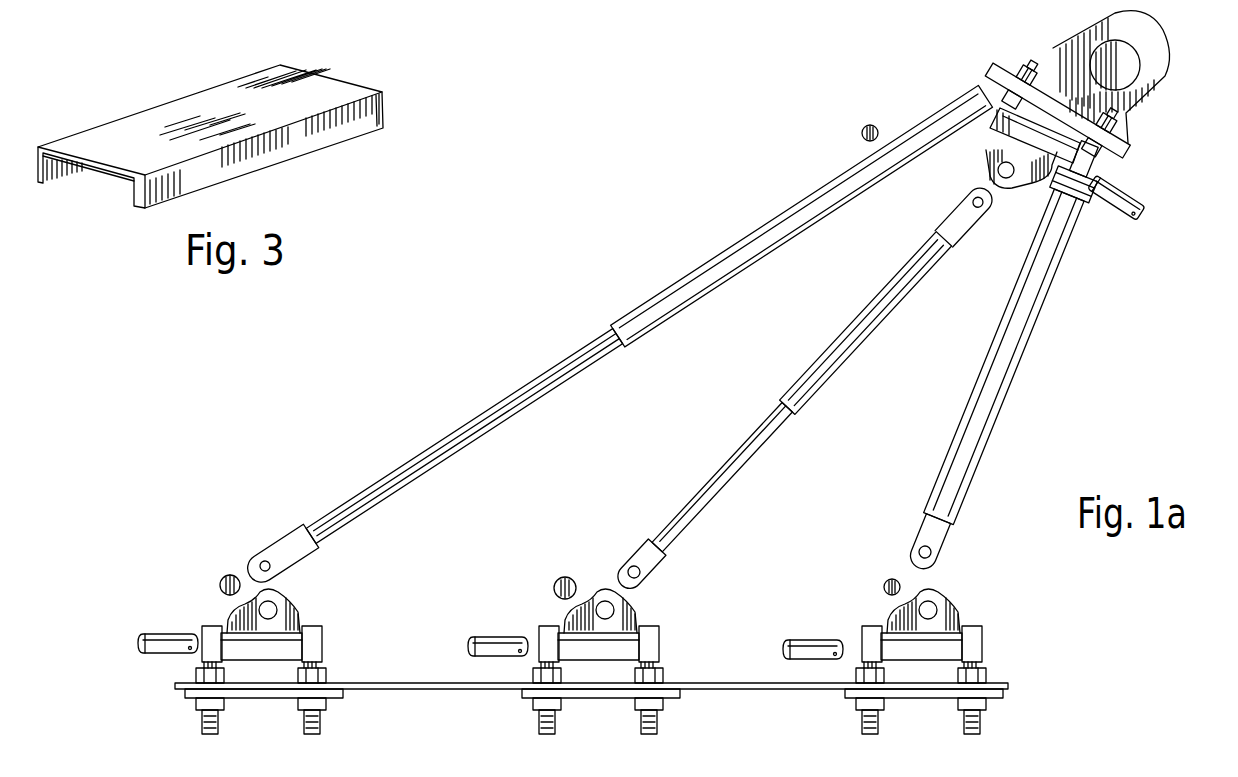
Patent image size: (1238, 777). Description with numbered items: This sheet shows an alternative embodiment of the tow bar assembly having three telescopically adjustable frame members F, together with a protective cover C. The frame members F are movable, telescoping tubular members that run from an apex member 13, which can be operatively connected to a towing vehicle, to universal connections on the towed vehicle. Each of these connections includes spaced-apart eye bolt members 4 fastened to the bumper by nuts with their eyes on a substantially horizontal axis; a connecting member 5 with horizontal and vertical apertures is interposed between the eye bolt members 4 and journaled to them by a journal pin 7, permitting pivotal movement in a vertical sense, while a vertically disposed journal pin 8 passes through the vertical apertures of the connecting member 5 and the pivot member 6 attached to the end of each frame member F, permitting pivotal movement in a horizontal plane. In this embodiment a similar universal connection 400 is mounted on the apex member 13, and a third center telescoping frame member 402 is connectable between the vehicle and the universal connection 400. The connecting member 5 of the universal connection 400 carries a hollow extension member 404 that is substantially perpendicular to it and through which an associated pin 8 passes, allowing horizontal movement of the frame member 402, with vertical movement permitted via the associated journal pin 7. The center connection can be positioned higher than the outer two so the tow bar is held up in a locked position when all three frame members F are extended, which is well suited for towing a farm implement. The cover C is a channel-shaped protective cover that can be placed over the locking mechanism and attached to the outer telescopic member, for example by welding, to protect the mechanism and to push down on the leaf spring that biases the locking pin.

In FIG. 3, the cover C is at (130, 113).
In FIG. 1A, the eye bolt members 4 is at (322, 632).
In FIG. 1A, the connecting member 5 is at (298, 608).
In FIG. 1A, the pivot member 6 is at (288, 533).
In FIG. 1A, the journal pin 7 is at (190, 632).
In FIG. 1A, the journal pin 8 is at (224, 578).
In FIG. 1A, the apex member 13 is at (1060, 45).
In FIG. 1A, the frame members F is at (694, 319).
In FIG. 1A, the universal connection 400 is at (972, 76).
In FIG. 1A, the third center telescoping frame member 402 is at (712, 455).
In FIG. 1A, the hollow extension member 404 is at (985, 163).